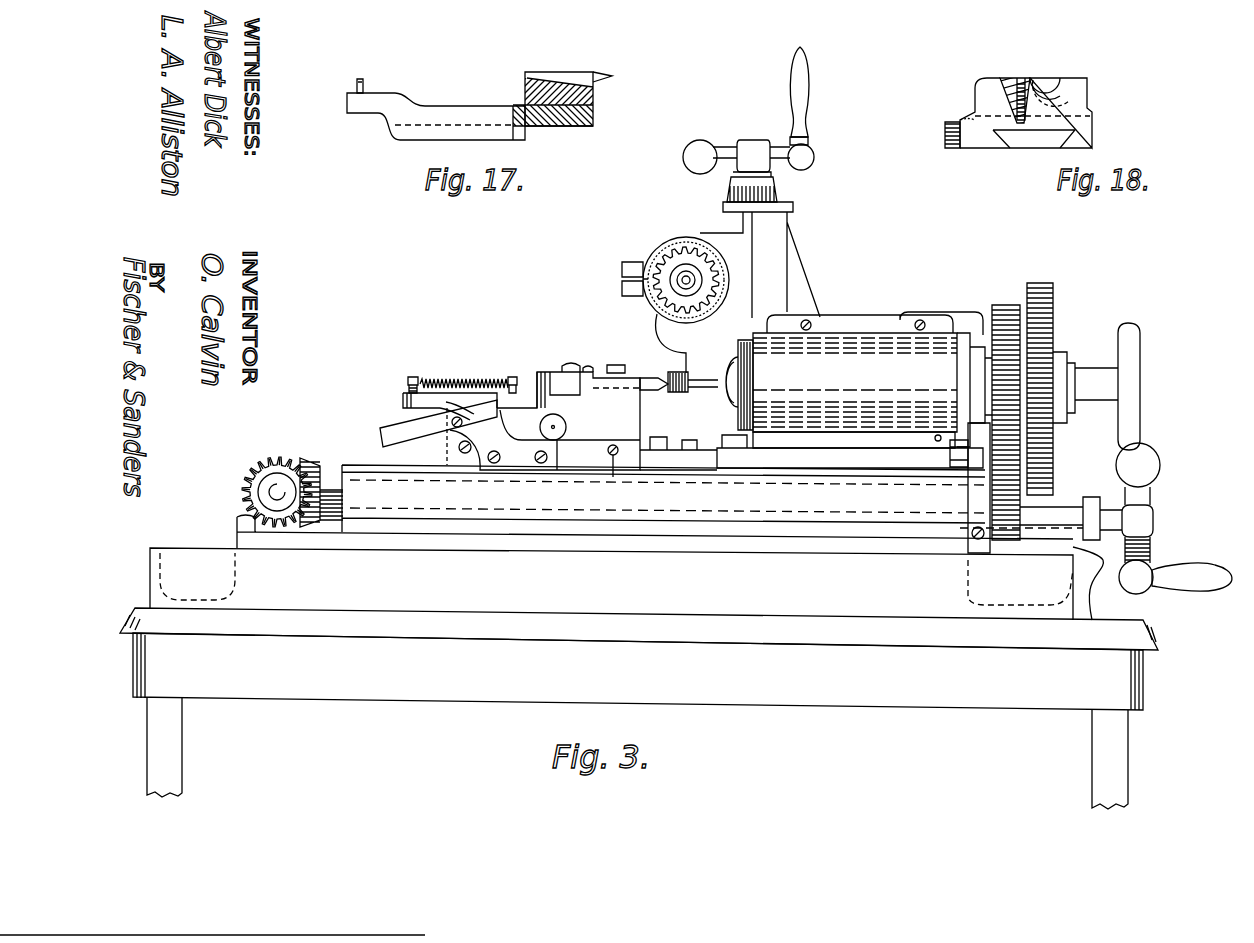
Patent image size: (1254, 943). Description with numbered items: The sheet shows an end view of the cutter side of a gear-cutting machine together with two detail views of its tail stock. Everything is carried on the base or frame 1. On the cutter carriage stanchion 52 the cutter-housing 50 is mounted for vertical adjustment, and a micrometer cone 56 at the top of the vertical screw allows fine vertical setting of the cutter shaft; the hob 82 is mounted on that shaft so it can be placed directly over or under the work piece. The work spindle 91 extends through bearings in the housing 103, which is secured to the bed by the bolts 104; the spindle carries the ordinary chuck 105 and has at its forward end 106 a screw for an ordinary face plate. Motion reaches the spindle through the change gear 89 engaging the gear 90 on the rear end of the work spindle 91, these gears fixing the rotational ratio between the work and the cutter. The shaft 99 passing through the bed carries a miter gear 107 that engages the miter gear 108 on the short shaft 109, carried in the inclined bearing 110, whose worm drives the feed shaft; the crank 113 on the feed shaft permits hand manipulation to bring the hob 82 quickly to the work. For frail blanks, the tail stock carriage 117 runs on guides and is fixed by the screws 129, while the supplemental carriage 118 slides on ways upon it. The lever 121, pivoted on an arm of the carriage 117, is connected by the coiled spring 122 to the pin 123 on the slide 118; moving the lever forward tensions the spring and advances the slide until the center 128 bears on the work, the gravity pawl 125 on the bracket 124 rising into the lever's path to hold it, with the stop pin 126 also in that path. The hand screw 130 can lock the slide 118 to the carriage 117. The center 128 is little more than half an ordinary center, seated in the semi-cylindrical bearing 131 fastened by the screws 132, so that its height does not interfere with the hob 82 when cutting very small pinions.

In FIG. 3, the base or frame 1 is at (639, 708).
In FIG. 3, the cutter-housing 50 is at (660, 327).
In FIG. 3, the cutter carriage stanchion 52 is at (751, 182).
In FIG. 3, the micrometer cone 56 is at (727, 195).
In FIG. 3, the hob 82 is at (672, 258).
In FIG. 3, the gear 89 is at (1053, 300).
In FIG. 3, the gear 90 is at (1053, 335).
In FIG. 3, the work spindle 91 is at (1092, 374).
In FIG. 3, the shaft 99 is at (398, 512).
In FIG. 3, the housing 103 is at (872, 380).
In FIG. 3, the bolts 104 is at (735, 450).
In FIG. 3, the chuck 105 is at (722, 372).
In FIG. 3, the forward end of the shaft 106 is at (743, 338).
In FIG. 3, the miter gear 107 is at (315, 460).
In FIG. 3, the miter gear 108 is at (277, 477).
In FIG. 3, the short shaft 109 is at (275, 492).
In FIG. 18, the inclined bearing 110 is at (1026, 113).
In FIG. 3, the crank 113 is at (1150, 496).
In FIG. 3, the tail stock carriage 117 is at (582, 416).
In FIG. 17, the supplemental carriage 118 is at (436, 116).
In FIG. 3, the lever 121 is at (527, 395).
In FIG. 3, the coiled spring 122 is at (445, 383).
In FIG. 17, the pin 123 is at (363, 85).
In FIG. 3, the pin 123 is at (407, 388).
In FIG. 3, the bracket 124 is at (517, 457).
In FIG. 3, the gravity pawl 125 is at (438, 423).
In FIG. 3, the stop pin 126 is at (497, 397).
In FIG. 17, the center 128 is at (575, 73).
In FIG. 18, the center 128 is at (1046, 78).
In FIG. 3, the center 128 is at (664, 379).
In FIG. 3, the screws 129 is at (458, 449).
In FIG. 18, the hand screw 130 is at (953, 148).
In FIG. 3, the hand screw 130 is at (566, 428).
In FIG. 17, the semi-cylindrical bearing 131 is at (595, 91).
In FIG. 18, the semi-cylindrical bearing 131 is at (1054, 92).
In FIG. 18, the screws 132 is at (1022, 76).